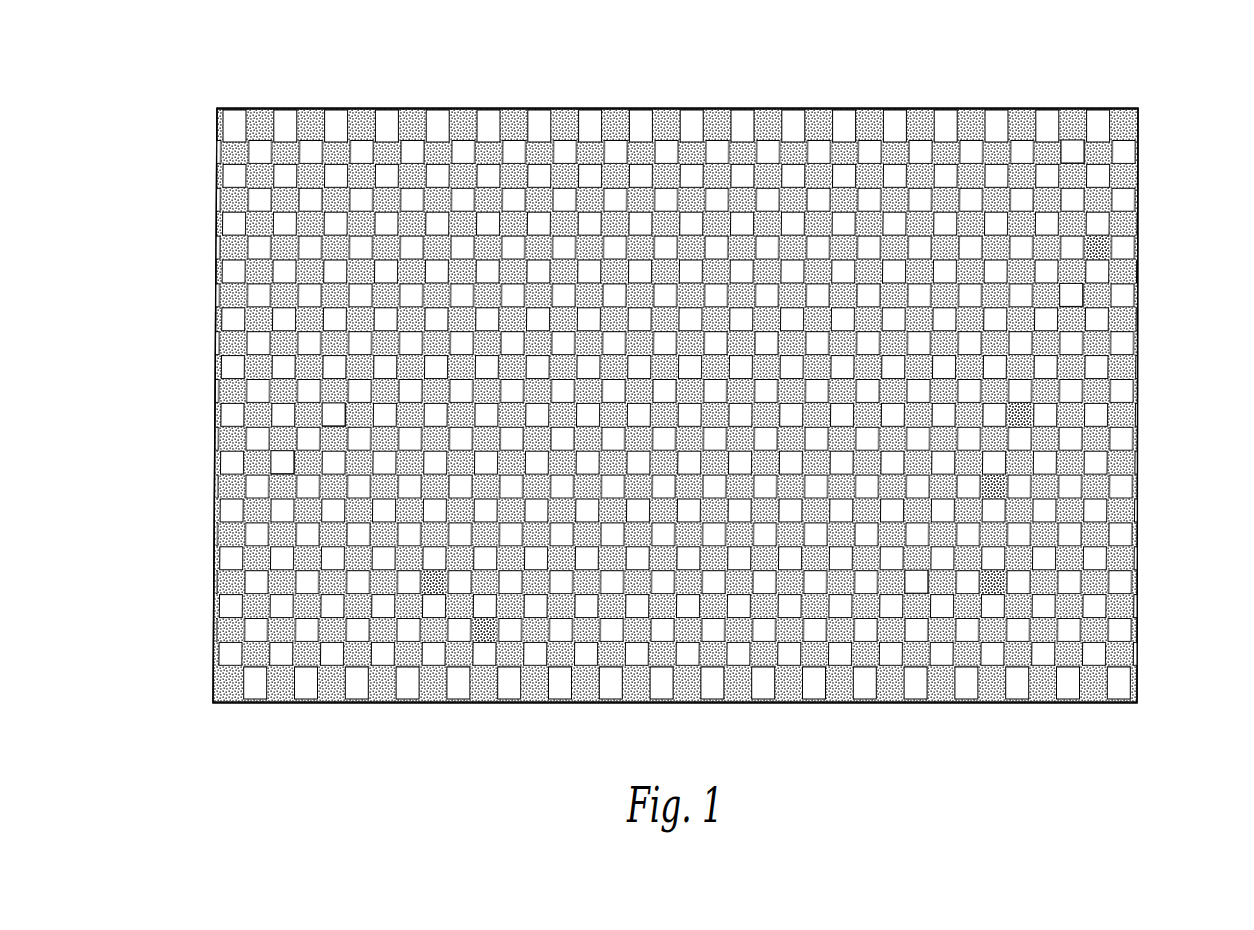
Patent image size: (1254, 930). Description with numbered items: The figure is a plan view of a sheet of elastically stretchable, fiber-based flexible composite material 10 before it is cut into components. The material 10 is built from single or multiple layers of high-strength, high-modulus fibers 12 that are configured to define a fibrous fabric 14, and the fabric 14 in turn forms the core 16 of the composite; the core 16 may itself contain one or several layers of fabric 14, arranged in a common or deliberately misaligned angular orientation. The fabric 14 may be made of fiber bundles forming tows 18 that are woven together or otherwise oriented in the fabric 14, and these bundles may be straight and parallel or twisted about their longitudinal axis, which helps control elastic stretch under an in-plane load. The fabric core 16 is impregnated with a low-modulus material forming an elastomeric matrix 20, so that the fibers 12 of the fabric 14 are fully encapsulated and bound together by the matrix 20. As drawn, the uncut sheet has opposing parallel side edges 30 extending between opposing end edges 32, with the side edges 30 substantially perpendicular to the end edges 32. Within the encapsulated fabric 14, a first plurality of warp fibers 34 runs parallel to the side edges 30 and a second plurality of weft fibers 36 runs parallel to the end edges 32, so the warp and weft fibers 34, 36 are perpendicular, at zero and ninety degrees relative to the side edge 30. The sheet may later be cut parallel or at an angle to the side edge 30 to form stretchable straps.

The flexible composite material 10 is at (1180, 91).
The fibers 12 is at (1092, 252).
The fabric 14 is at (1072, 303).
The core 16 is at (1022, 412).
The tows 18 is at (995, 583).
The elastomeric matrix 20 is at (1000, 487).
The side edges 30 is at (515, 108).
The end edges 32 is at (214, 543).
The warp fibers 34 is at (485, 635).
The weft fibers 36 is at (277, 470).